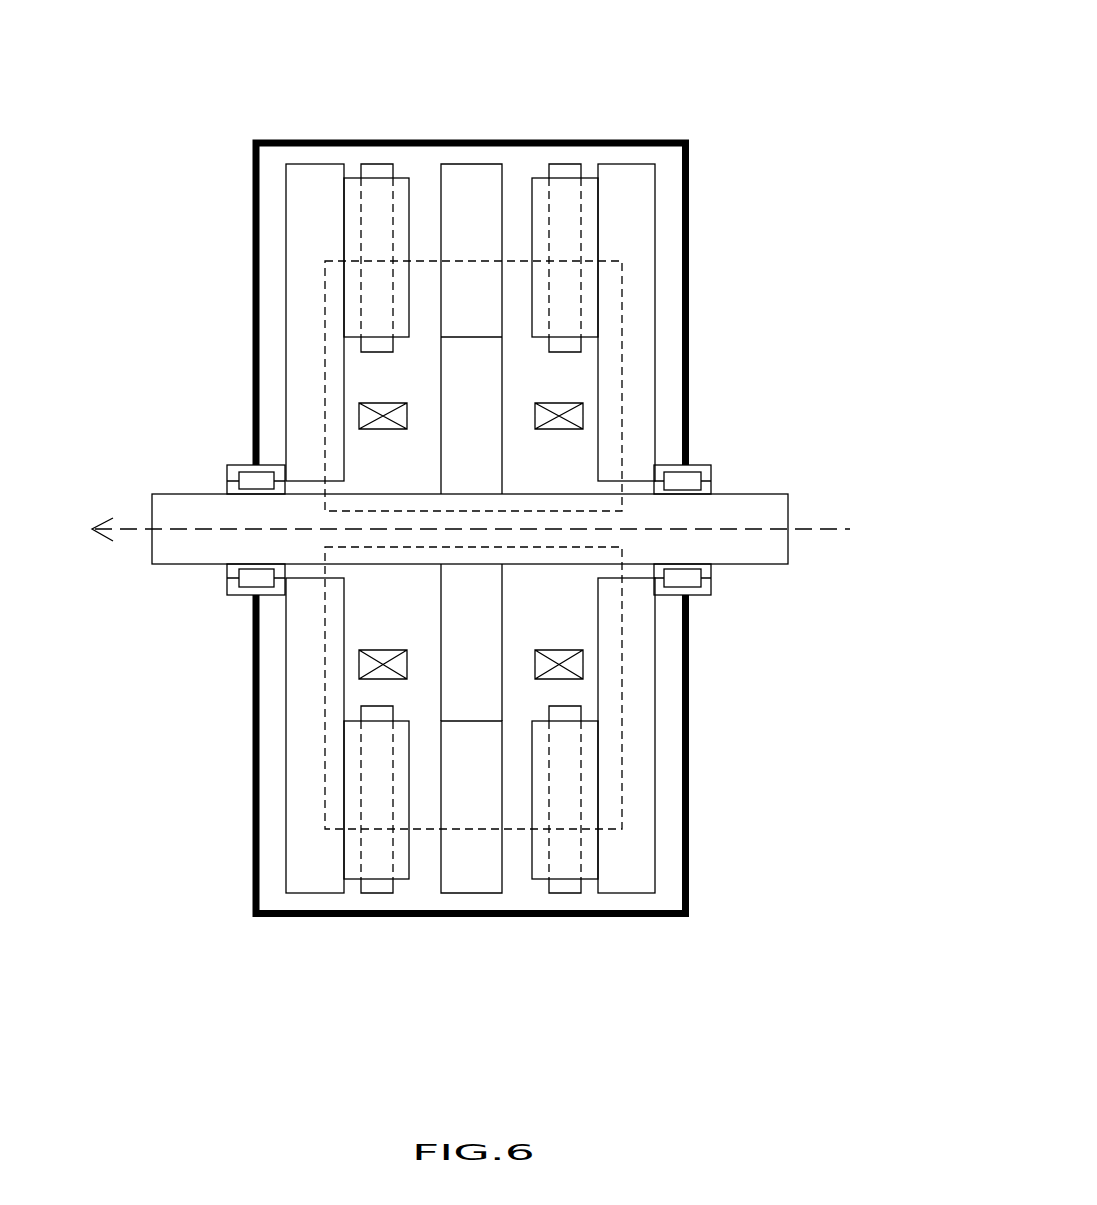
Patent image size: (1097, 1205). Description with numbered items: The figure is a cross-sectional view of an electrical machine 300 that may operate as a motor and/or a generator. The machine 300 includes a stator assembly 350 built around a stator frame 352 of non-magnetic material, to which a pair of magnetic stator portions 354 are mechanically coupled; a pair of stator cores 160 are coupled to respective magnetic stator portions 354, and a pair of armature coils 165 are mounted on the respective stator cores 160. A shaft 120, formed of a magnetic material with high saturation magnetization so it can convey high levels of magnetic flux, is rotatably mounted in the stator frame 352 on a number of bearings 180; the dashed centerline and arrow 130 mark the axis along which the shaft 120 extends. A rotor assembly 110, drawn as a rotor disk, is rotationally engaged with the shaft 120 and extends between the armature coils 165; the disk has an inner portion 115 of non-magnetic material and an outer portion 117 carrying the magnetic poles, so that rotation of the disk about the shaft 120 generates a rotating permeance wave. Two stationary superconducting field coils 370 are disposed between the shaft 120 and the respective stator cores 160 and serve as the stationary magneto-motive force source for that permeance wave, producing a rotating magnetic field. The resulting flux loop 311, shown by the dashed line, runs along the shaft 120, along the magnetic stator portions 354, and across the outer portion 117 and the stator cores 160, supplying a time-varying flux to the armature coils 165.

The rotor assembly 110 is at (488, 893).
The inner portion 115 is at (476, 694).
The outer portion 117 is at (460, 872).
The shaft 120 is at (762, 552).
The rotation axis 130 is at (445, 530).
The stator core 160 is at (594, 315).
The armature coil 165 is at (373, 344).
The bearing 180 is at (227, 481).
The electrical machine 300 is at (853, 56).
The flux loop 311 is at (325, 303).
The stator assembly 350 is at (662, 110).
The stator frame 352 is at (689, 291).
The magnetic stator portion 354 is at (310, 195).
The stationary superconducting field coil 370 is at (359, 416).